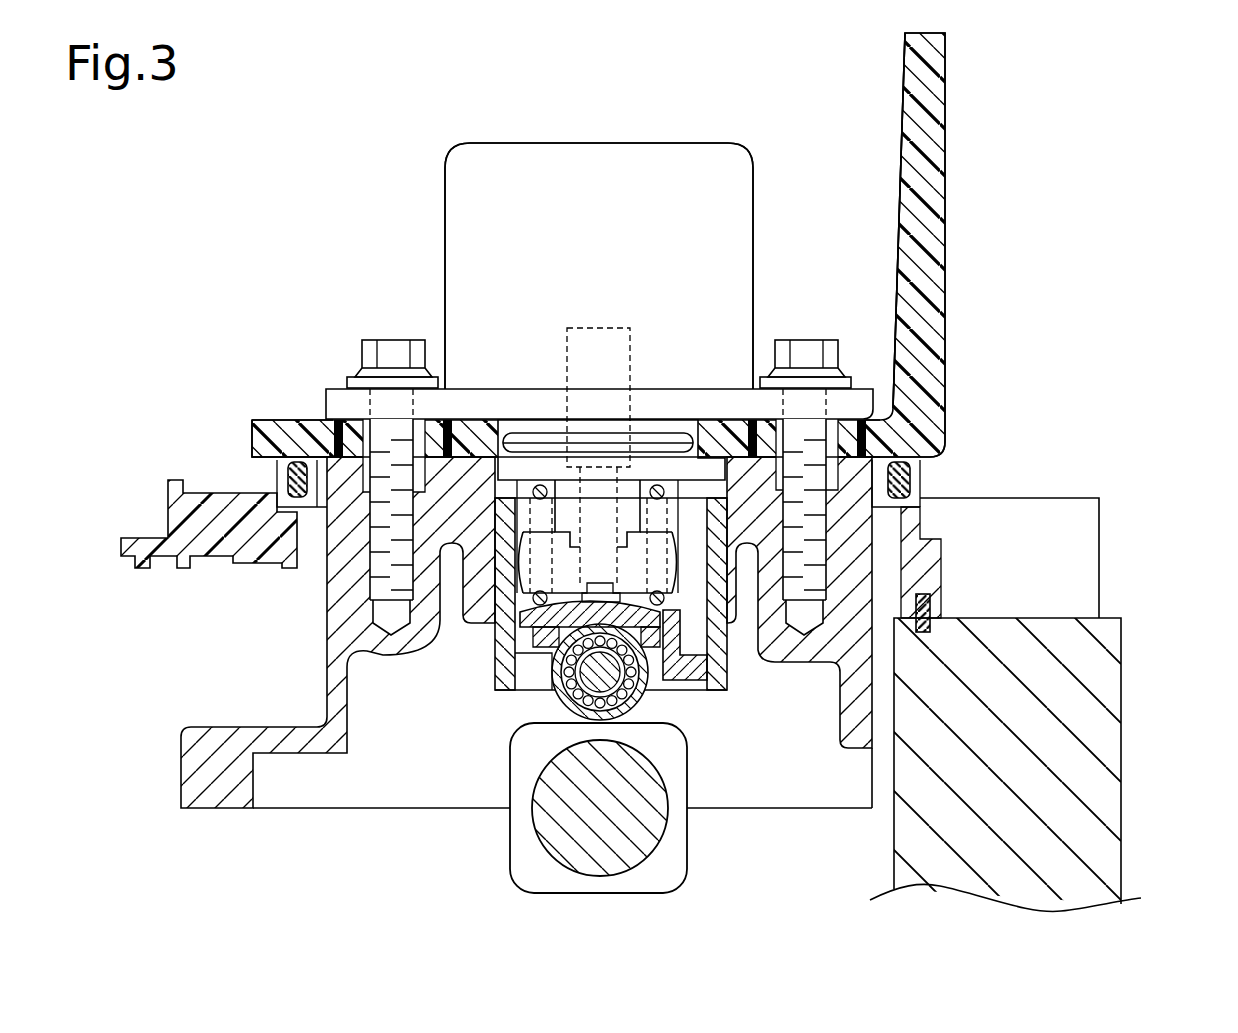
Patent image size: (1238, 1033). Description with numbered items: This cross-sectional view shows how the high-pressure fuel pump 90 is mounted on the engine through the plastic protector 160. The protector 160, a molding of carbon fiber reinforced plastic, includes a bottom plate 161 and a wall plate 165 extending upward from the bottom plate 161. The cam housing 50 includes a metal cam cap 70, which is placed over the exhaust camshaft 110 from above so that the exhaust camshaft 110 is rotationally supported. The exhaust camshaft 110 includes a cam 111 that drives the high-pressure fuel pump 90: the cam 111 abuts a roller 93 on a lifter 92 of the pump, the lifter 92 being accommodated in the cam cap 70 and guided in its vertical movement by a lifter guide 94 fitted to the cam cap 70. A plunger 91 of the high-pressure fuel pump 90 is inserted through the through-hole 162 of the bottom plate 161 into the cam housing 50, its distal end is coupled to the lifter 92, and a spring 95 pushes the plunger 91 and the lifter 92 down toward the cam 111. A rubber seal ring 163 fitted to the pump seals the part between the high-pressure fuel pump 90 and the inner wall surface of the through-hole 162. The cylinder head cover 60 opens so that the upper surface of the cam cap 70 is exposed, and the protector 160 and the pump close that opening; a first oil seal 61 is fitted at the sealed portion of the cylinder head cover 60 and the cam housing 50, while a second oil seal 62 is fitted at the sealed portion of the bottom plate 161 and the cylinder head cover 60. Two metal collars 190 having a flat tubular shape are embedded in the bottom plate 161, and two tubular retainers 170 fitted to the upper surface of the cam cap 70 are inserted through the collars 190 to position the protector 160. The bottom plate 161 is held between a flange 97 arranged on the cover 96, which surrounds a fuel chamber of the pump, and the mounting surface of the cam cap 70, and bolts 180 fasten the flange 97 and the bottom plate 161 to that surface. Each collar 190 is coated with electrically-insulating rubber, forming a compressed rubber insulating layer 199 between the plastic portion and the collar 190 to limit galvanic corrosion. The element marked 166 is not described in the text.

The cam housing 50 is at (1115, 806).
The cylinder head cover 60 is at (170, 523).
The first oil seal 61 is at (930, 599).
The second oil seal 62 is at (287, 476).
The cam cap 70 is at (325, 648).
The high-pressure fuel pump 90 is at (441, 109).
The plunger 91 is at (633, 341).
The lifter 92 is at (673, 628).
The roller 93 is at (644, 698).
The lifter guide 94 is at (494, 670).
The spring 95 is at (493, 632).
The cover 96 is at (446, 249).
The flange 97 is at (483, 397).
The exhaust camshaft 110 is at (652, 834).
The cam 111 is at (543, 888).
The protector 160 is at (988, 204).
The bottom plate 161 is at (292, 418).
The through-hole 162 is at (687, 419).
The seal ring 163 is at (536, 440).
The wall plate 165 is at (948, 270).
The inner surface 166 is at (906, 232).
The retainer 170 is at (362, 510).
The bolt 180 is at (392, 340).
The collar 190 is at (352, 430).
The insulating layer 199 is at (332, 437).